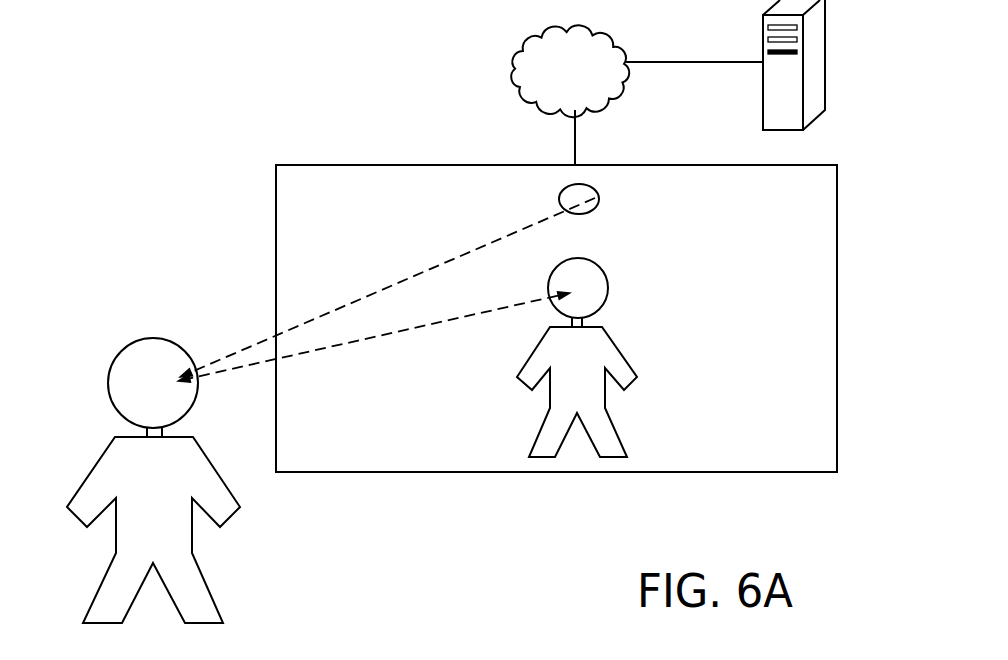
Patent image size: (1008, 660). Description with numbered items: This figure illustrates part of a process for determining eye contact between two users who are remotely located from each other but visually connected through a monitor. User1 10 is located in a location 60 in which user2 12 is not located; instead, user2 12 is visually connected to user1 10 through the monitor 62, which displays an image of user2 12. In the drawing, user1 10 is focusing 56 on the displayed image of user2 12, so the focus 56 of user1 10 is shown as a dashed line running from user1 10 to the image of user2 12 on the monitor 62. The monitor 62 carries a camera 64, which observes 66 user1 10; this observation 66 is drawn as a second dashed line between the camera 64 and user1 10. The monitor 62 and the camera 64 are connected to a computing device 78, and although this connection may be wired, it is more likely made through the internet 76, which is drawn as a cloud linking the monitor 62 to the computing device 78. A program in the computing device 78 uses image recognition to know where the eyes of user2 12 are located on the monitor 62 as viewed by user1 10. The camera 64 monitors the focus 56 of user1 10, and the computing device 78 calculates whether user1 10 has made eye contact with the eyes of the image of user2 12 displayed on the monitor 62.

The user1 10 is at (100, 463).
The user2 12 is at (618, 342).
The focus 56 is at (435, 324).
The location 60 is at (445, 557).
The monitor 62 is at (285, 237).
The camera 64 is at (599, 195).
The observing 66 is at (398, 280).
The internet 76 is at (587, 79).
The computing device 78 is at (825, 72).